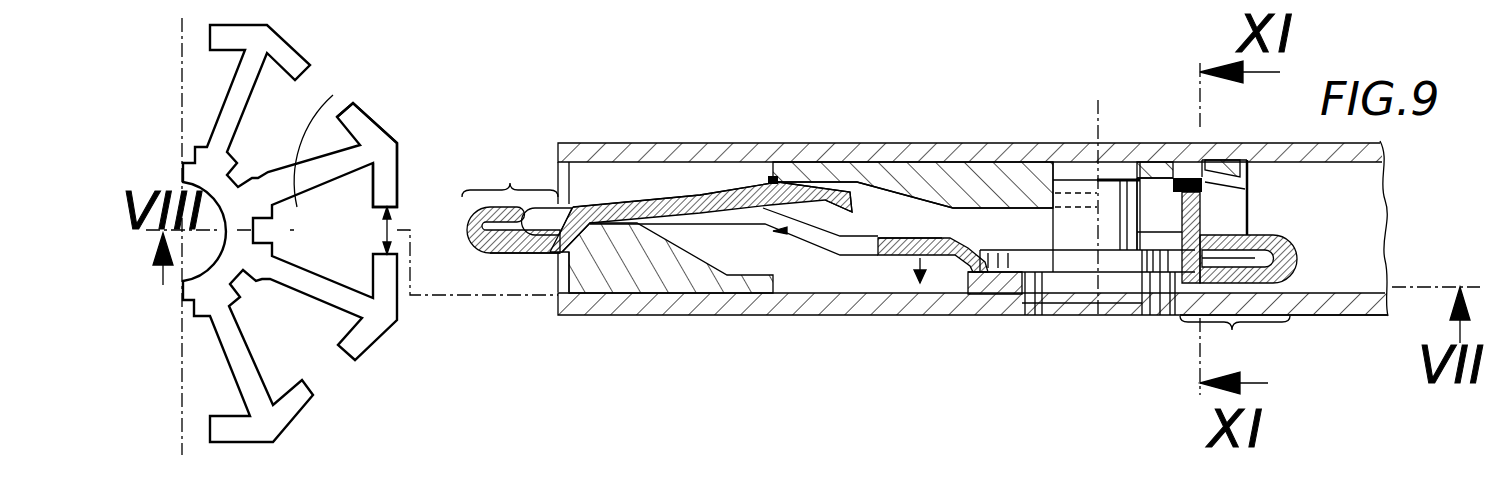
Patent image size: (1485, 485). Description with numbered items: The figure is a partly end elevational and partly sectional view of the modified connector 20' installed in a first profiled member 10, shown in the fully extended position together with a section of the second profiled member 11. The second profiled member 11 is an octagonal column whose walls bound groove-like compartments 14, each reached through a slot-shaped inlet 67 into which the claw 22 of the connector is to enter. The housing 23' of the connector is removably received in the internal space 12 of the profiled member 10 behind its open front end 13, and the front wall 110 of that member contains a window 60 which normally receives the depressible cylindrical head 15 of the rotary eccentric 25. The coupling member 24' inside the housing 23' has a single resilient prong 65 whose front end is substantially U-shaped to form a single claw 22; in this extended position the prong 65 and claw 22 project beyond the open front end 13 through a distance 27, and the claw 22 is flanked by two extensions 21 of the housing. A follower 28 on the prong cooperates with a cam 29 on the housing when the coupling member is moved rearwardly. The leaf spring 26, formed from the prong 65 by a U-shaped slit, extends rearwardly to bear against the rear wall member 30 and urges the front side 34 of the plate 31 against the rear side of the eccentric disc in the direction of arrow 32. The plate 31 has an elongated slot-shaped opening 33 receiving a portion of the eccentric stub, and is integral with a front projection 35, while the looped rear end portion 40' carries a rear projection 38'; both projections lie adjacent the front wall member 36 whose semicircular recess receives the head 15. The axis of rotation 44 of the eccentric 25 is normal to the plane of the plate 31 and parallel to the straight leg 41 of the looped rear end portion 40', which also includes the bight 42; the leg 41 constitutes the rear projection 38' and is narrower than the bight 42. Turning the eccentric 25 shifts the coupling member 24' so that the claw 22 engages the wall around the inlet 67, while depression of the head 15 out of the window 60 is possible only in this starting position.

The first profiled member 10 is at (725, 315).
The second profiled member 11 is at (297, 44).
The internal space 12 is at (1370, 185).
The open front end 13 is at (556, 150).
The compartment 14 is at (283, 123).
The head 15 is at (1060, 288).
The modified connector 20' is at (781, 137).
The extensions 21 is at (500, 254).
The claw 22 is at (462, 238).
The housing 23' is at (973, 149).
The coupling member 24' is at (675, 148).
The rotary eccentric 25 is at (1060, 300).
The leaf spring 26 is at (770, 180).
The distance 27 is at (517, 195).
The follower 28 is at (576, 205).
The cam 29 is at (593, 262).
The rear wall member 30 is at (812, 170).
The plate 31 is at (893, 237).
The arrow 32 is at (912, 258).
The opening 33 is at (1033, 247).
The front side 34 is at (1145, 258).
The front projection 35 is at (997, 277).
The front wall member 36 is at (973, 272).
The rear projection 38' is at (1173, 307).
The looped rear end portion 40' is at (1235, 341).
The leg 41 is at (1202, 203).
The bight 42 is at (1298, 255).
The axis of rotation 44 is at (1100, 112).
The window 60 is at (1027, 282).
The prong 65 is at (734, 234).
The inlet 67 is at (384, 232).
The front wall 110 is at (1340, 298).